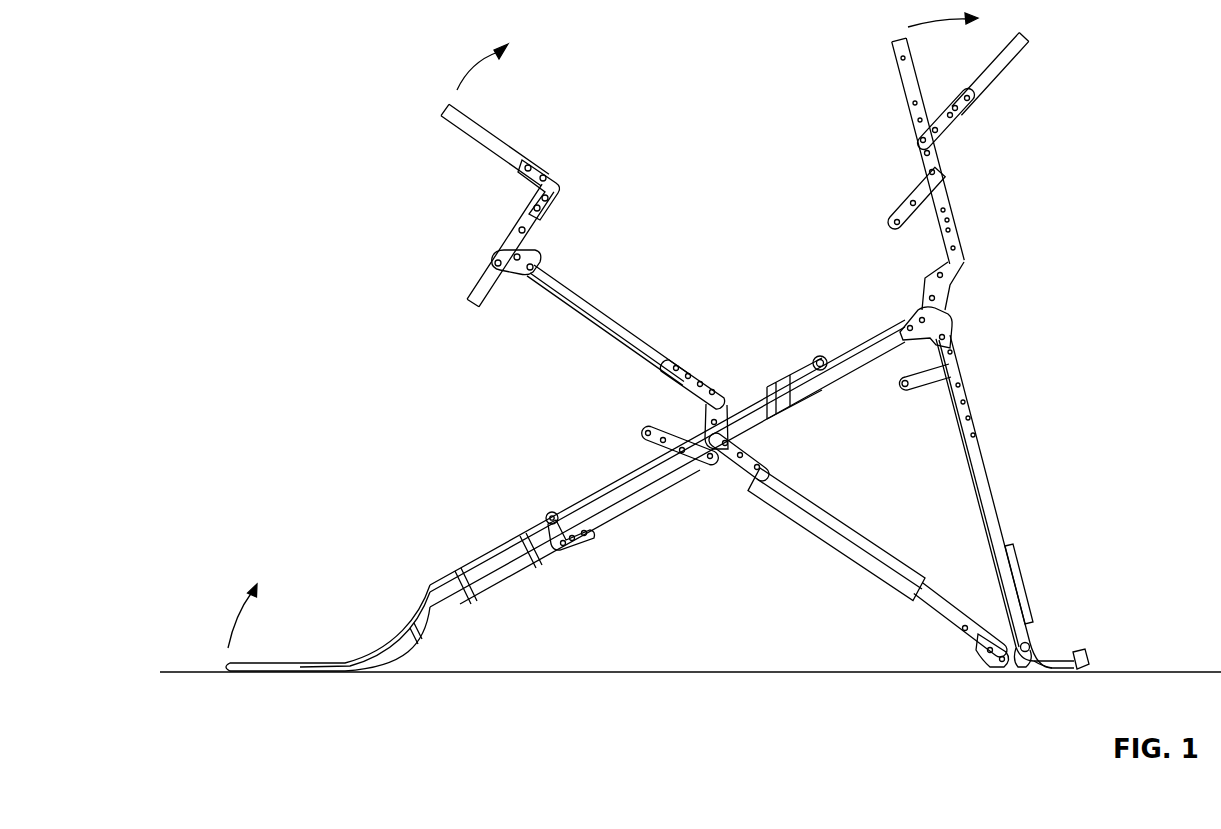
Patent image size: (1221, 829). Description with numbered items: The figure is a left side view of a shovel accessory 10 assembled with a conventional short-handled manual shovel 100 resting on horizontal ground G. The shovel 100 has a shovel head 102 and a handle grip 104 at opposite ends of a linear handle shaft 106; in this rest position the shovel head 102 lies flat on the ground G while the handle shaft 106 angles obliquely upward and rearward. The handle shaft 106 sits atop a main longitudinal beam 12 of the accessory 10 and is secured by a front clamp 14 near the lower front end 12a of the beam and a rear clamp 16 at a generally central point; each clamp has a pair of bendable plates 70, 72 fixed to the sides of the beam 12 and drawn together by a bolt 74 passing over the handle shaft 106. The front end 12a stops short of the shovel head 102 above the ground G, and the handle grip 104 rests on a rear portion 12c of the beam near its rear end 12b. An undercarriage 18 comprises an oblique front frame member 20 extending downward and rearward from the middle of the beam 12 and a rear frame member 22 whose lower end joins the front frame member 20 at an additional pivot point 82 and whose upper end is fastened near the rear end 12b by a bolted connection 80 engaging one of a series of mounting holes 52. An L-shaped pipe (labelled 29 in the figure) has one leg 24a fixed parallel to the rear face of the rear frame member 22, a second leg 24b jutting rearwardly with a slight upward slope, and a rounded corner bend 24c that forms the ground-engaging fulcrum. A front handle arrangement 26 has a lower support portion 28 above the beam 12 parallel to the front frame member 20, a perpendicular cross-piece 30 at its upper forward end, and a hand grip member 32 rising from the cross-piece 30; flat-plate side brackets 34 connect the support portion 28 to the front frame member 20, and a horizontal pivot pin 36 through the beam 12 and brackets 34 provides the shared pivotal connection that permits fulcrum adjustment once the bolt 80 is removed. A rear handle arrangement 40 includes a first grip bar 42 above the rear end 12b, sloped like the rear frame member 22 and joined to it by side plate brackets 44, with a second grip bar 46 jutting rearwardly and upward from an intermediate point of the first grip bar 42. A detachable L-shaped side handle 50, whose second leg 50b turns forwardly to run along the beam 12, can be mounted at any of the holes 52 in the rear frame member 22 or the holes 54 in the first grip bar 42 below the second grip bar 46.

The shovel accessory 10 is at (1052, 182).
The main longitudinal beam 12 is at (673, 449).
The lower front end 12a is at (492, 588).
The rear end 12b is at (909, 307).
The rear portion 12c is at (713, 464).
The front clamp 14 is at (545, 514).
The rear clamp 16 is at (642, 423).
The undercarriage 18 is at (1011, 465).
The front frame member 20 is at (848, 555).
The rear frame member 22 is at (1005, 501).
The leg 24a is at (1020, 565).
The leg 24b is at (1065, 655).
The rounded corner bend 24c is at (1045, 676).
The front handle arrangement 26 is at (621, 189).
The lower support portion 28 is at (613, 313).
The foot 29 is at (1047, 597).
The cross-piece 30 is at (483, 283).
The hand grip member 32 is at (498, 138).
The flat-plate side brackets 34 is at (708, 388).
The horizontal pivot pin 36 is at (748, 440).
The rear handle arrangement 40 is at (860, 102).
The first grip bar 42 is at (912, 70).
The side plate brackets 44 is at (960, 265).
The second grip bar 46 is at (1007, 62).
The detachable side handle 50 is at (905, 392).
The second leg 50b is at (895, 379).
The mounting holes 52 is at (975, 434).
The mounting holes 54 is at (962, 240).
The bendable plate 70 is at (548, 560).
The bendable plate 72 is at (705, 426).
The bolt 74 is at (546, 522).
The bolted connection 80 is at (950, 338).
The additional pivot point 82 is at (1012, 675).
The manual shovel 100 is at (608, 484).
The shovel head 102 is at (340, 660).
The handle grip 104 is at (818, 355).
The handle shaft 106 is at (534, 533).
The ground G is at (725, 672).